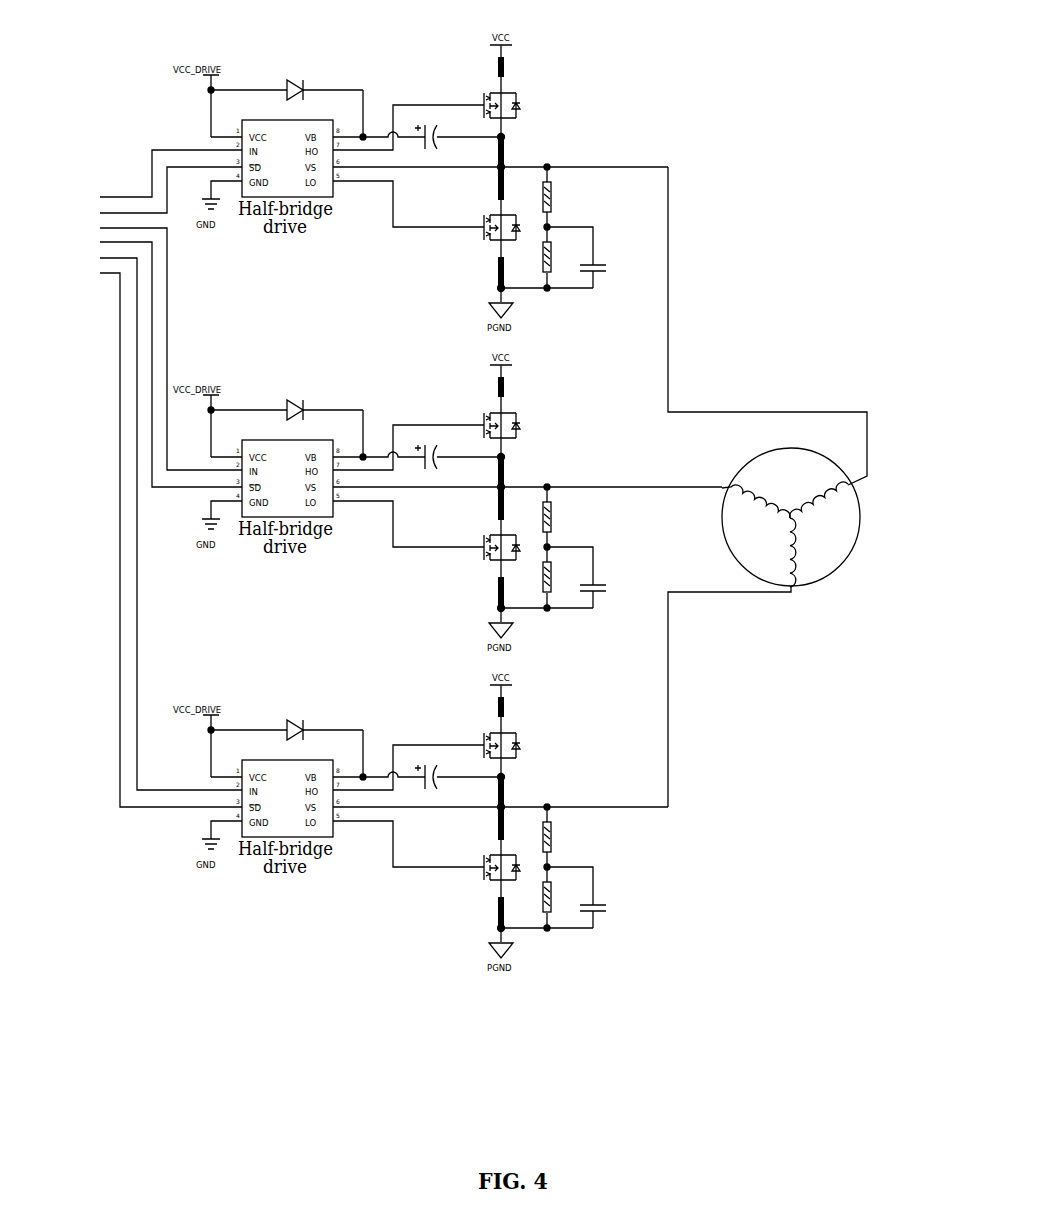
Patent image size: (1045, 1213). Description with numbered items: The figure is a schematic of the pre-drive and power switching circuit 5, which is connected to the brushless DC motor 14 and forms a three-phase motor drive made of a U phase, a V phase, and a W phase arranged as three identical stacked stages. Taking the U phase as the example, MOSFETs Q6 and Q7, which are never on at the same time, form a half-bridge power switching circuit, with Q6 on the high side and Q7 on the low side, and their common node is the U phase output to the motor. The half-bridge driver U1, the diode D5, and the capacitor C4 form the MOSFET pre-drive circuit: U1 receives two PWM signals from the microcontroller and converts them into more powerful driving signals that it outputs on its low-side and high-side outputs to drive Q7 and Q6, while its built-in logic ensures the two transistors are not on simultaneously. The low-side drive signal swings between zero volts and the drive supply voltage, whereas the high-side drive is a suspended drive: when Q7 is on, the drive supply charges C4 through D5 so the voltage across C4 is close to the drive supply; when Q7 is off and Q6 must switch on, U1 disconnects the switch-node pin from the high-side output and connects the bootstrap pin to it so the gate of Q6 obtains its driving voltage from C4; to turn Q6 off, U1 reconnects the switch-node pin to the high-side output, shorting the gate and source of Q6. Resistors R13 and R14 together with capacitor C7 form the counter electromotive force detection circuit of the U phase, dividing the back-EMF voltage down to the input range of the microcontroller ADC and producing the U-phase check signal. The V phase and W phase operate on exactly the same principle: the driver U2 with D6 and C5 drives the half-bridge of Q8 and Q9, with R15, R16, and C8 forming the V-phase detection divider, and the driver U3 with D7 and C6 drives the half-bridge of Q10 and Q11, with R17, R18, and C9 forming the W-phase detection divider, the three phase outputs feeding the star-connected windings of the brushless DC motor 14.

The pre-drive and power switching circuit 5 is at (122, 147).
The brushless DC motor 14 is at (835, 542).
The MOSFET pre-drive chip U1 is at (287, 152).
The MOSFET pre-drive chip U2 is at (287, 472).
The MOSFET pre-drive chip U3 is at (287, 792).
The diode D5 is at (286, 82).
The diode D6 is at (286, 402).
The diode D7 is at (286, 722).
The capacitor C4 is at (426, 140).
The capacitor C5 is at (426, 460).
The capacitor C6 is at (426, 780).
The capacitor C7 is at (599, 266).
The capacitor C8 is at (599, 586).
The capacitor C9 is at (599, 906).
The MOSFET Q6 is at (508, 105).
The MOSFET Q7 is at (508, 227).
The MOSFET Q8 is at (508, 425).
The MOSFET Q9 is at (508, 547).
The MOSFET Q10 is at (511, 745).
The MOSFET Q11 is at (511, 867).
The resistor R13 is at (556, 197).
The resistor R14 is at (556, 257).
The resistor R15 is at (556, 517).
The resistor R16 is at (556, 577).
The resistor R17 is at (556, 837).
The resistor R18 is at (556, 897).